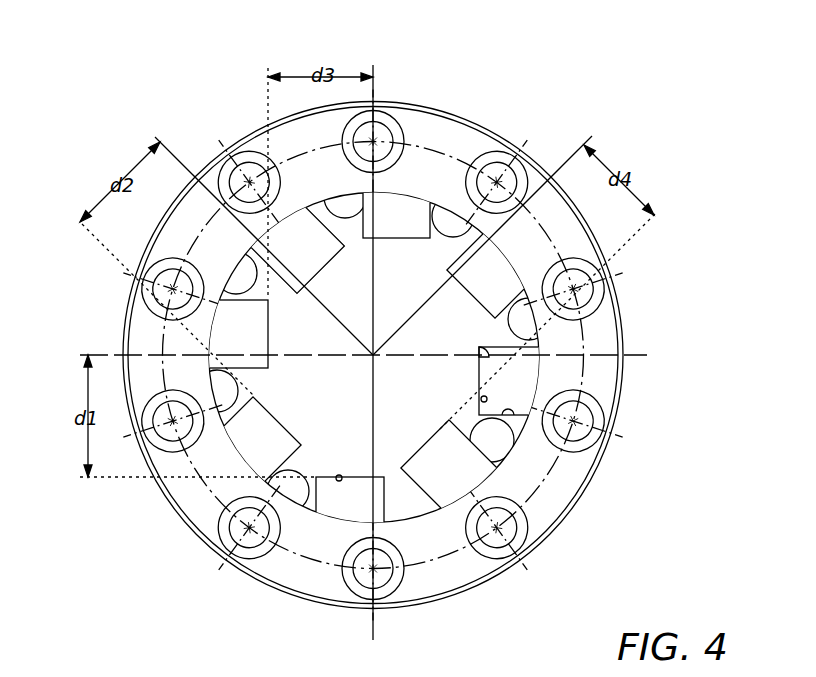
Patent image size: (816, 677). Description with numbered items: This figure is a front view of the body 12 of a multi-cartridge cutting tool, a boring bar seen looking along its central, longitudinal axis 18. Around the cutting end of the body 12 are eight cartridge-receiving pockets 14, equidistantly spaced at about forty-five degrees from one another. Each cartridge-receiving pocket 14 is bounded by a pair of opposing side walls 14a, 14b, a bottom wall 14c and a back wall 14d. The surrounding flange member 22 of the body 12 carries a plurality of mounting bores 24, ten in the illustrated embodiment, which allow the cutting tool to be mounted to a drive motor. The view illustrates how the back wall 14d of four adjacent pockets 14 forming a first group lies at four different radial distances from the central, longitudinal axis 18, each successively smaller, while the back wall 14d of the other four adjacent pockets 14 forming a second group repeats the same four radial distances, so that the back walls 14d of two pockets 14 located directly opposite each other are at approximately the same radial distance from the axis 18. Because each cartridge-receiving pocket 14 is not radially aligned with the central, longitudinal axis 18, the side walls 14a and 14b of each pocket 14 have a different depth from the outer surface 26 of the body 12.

The body 12 is at (578, 70).
The cartridge-receiving pocket 14 is at (515, 373).
The side wall 14a is at (524, 405).
The side wall 14b is at (522, 229).
The bottom wall 14c is at (526, 376).
The back wall 14d is at (481, 399).
The central, longitudinal axis 18 is at (373, 355).
The flange member 22 is at (143, 340).
The mounting bore 24 is at (387, 117).
The outer surface 26 is at (182, 496).